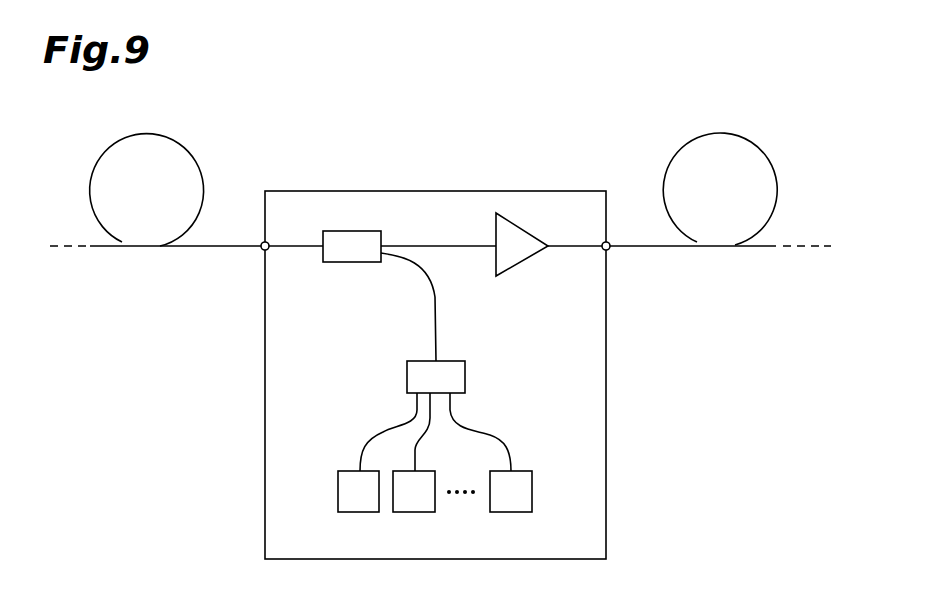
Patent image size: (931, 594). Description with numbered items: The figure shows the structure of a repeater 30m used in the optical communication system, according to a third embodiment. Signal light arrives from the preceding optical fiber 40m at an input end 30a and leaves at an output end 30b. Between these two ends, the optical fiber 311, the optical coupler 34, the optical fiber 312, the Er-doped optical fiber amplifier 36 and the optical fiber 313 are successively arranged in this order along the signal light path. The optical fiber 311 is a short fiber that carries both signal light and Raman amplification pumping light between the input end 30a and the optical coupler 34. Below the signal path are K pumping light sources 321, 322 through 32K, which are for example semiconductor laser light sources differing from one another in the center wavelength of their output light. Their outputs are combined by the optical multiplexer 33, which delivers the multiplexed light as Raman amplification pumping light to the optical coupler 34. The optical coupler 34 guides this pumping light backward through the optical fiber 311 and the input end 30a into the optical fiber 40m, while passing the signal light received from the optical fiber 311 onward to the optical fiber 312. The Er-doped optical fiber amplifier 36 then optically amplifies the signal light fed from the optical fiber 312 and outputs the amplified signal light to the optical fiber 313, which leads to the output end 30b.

The optical fiber 40m is at (170, 133).
The repeater 30m is at (445, 190).
The input end 30a is at (263, 249).
The output end 30b is at (609, 249).
The optical fiber 311 is at (280, 244).
The optical fiber 312 is at (420, 243).
The optical fiber 313 is at (583, 244).
The optical coupler 34 is at (345, 264).
The Er-doped optical fiber amplifier 36 is at (518, 265).
The optical multiplexer 33 is at (407, 375).
The pumping light source 321 is at (352, 513).
The pumping light source 322 is at (415, 513).
The pumping light source 32K is at (512, 513).